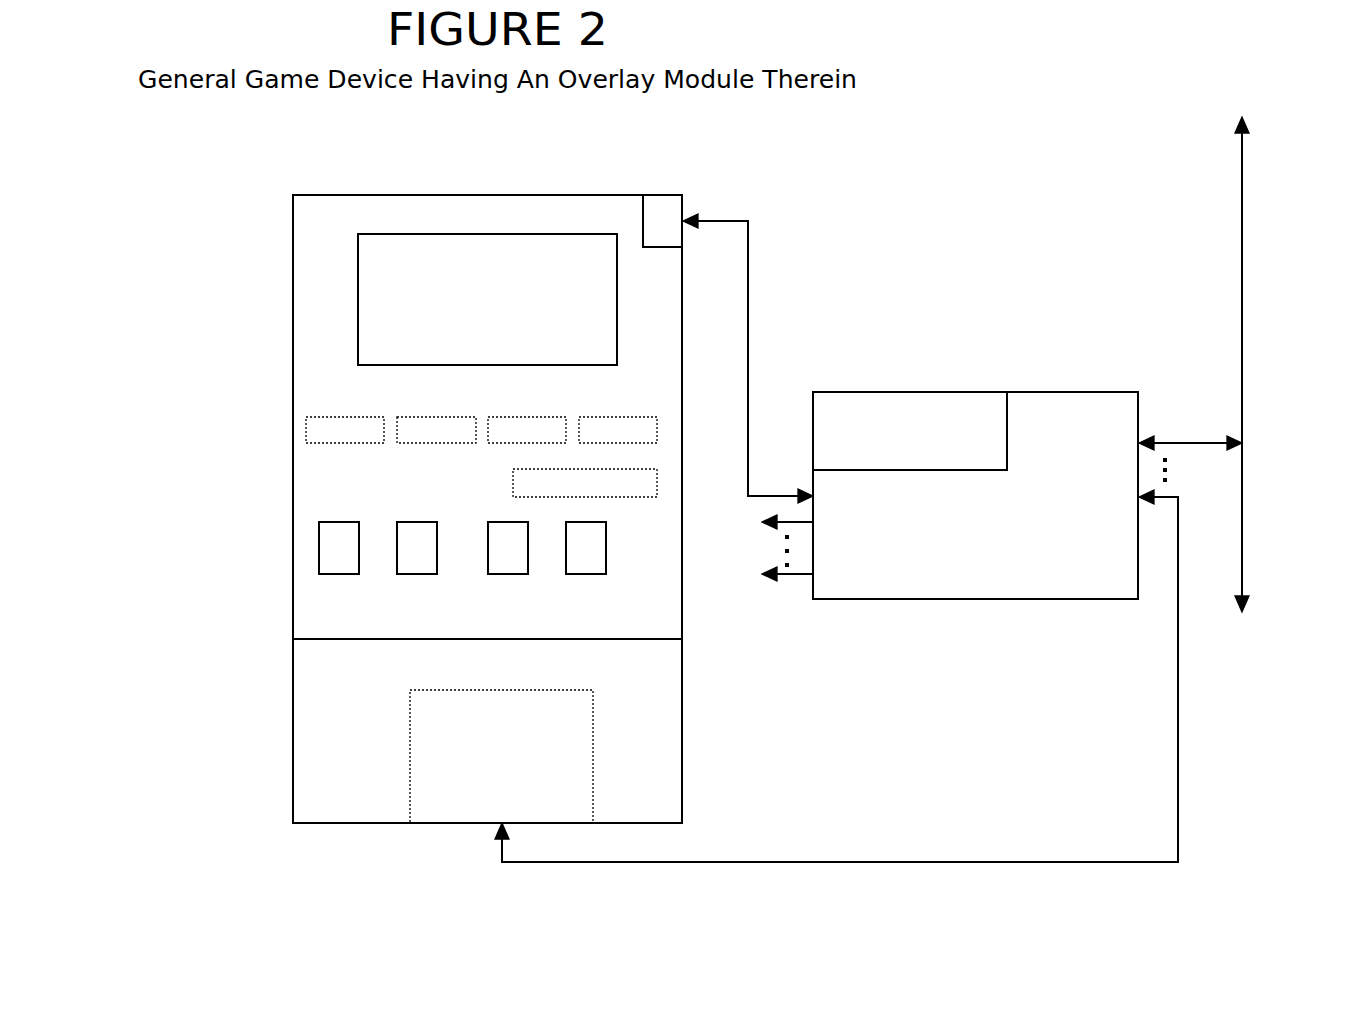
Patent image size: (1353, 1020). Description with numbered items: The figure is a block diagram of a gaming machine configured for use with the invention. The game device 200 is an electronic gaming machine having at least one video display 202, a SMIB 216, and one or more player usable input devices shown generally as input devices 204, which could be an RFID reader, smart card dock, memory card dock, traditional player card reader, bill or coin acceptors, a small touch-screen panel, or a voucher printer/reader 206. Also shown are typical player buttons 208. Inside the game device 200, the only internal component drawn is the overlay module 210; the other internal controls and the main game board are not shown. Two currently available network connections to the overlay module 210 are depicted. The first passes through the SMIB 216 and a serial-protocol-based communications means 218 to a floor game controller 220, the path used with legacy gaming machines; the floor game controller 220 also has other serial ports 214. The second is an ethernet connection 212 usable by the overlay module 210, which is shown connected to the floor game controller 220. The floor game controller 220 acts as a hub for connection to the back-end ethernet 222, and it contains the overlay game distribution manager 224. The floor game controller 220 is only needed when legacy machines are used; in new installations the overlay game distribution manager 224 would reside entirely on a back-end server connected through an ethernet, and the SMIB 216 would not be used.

The game device 200 is at (287, 203).
The video display 202 is at (598, 319).
The player usable input devices 204 is at (321, 432).
The voucher printer/reader 206 is at (644, 483).
The player buttons 208 is at (335, 555).
The overlay module 210 is at (460, 812).
The ethernet connection 212 is at (930, 860).
The serial ports 214 is at (782, 578).
The SMIB (Slot Machine Interface Board) 216 is at (668, 208).
The serial-protocol-based communications means 218 is at (752, 249).
The floor game controller 220 is at (1045, 418).
The back-end ethernet 222 is at (1232, 300).
The overlay game distribution manager 224 is at (850, 392).